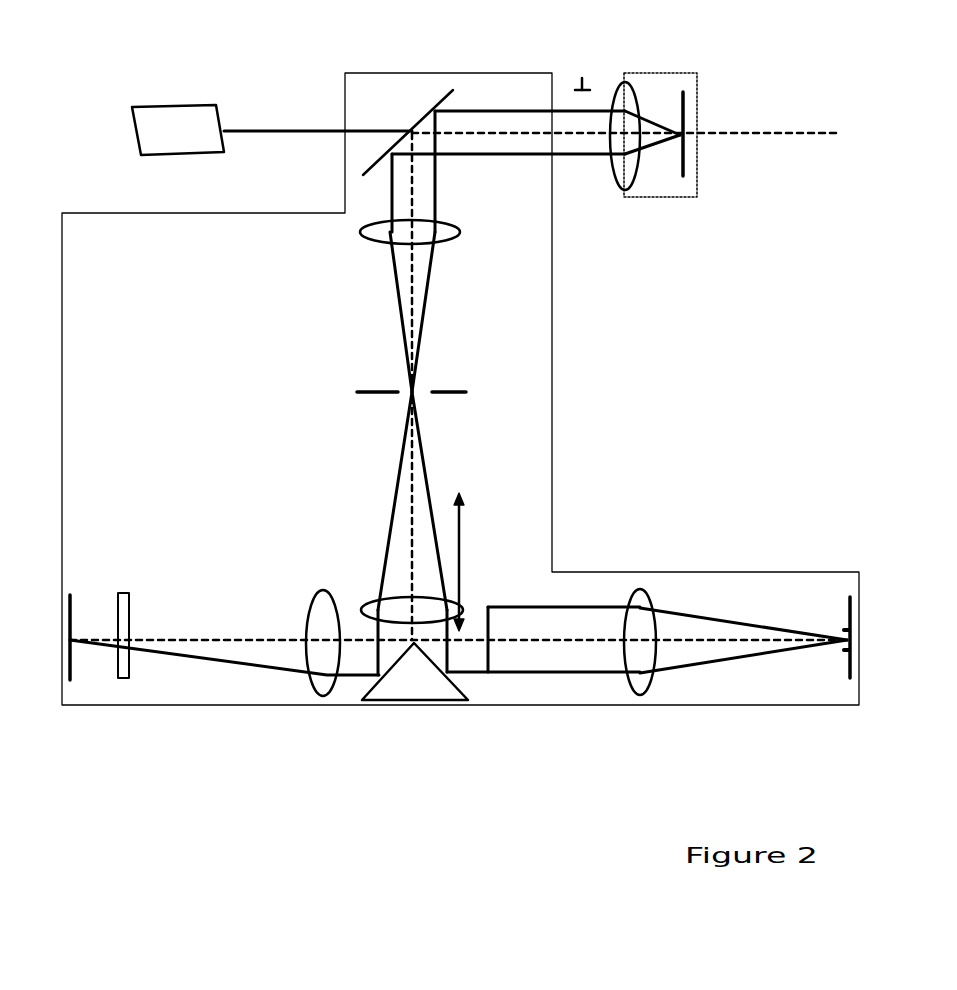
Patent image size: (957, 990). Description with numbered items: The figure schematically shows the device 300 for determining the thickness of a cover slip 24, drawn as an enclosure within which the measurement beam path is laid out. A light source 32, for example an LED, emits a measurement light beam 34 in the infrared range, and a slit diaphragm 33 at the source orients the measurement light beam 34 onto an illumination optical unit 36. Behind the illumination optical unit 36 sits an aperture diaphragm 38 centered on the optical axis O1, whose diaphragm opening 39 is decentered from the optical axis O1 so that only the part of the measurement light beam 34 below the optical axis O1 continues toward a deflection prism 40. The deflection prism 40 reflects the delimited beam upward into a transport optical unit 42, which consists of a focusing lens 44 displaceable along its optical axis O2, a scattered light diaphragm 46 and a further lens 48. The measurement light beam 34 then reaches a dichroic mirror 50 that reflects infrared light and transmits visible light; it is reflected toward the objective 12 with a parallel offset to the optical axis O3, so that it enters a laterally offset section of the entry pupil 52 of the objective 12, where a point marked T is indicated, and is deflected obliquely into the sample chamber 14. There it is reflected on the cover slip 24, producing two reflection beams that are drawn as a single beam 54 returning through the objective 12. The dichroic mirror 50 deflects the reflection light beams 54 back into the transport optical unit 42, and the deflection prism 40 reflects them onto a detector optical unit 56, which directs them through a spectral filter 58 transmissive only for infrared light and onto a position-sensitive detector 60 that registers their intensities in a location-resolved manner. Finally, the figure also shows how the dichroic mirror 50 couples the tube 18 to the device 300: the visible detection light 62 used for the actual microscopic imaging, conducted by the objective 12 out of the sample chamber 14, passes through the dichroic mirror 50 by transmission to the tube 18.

The optical system enclosure 300 is at (552, 353).
The tube 18 is at (180, 104).
The visible detection light 62 is at (306, 129).
The dichroic mirror 50 is at (372, 166).
The reflection light beams 54 is at (516, 110).
The measurement light beam 34 is at (520, 155).
The objective 12 is at (630, 180).
The cover slip 24 is at (687, 100).
The sample chamber 14 is at (697, 190).
The entry pupil 52 is at (582, 78).
The further lens 48 is at (450, 232).
The scattered light diaphragm 46 is at (467, 392).
The transport optical unit 42 is at (332, 392).
The focusing lens 44 is at (425, 597).
The deflection prism 40 is at (418, 690).
The detector optical unit 56 is at (323, 696).
The position-sensitive detector 60 is at (68, 617).
The spectral filter 58 is at (130, 612).
The aperture diaphragm 38 is at (487, 678).
The diaphragm opening 39 is at (493, 670).
The illumination optical unit 36 is at (643, 592).
The light source 32 is at (853, 614).
The slit diaphragm 33 is at (851, 650).
The optical axis of the illumination optical unit O1 is at (563, 642).
The optical axis of the focusing lens O2 is at (415, 527).
The optical axis of the objective O3 is at (806, 137).
The focal point T is at (578, 177).